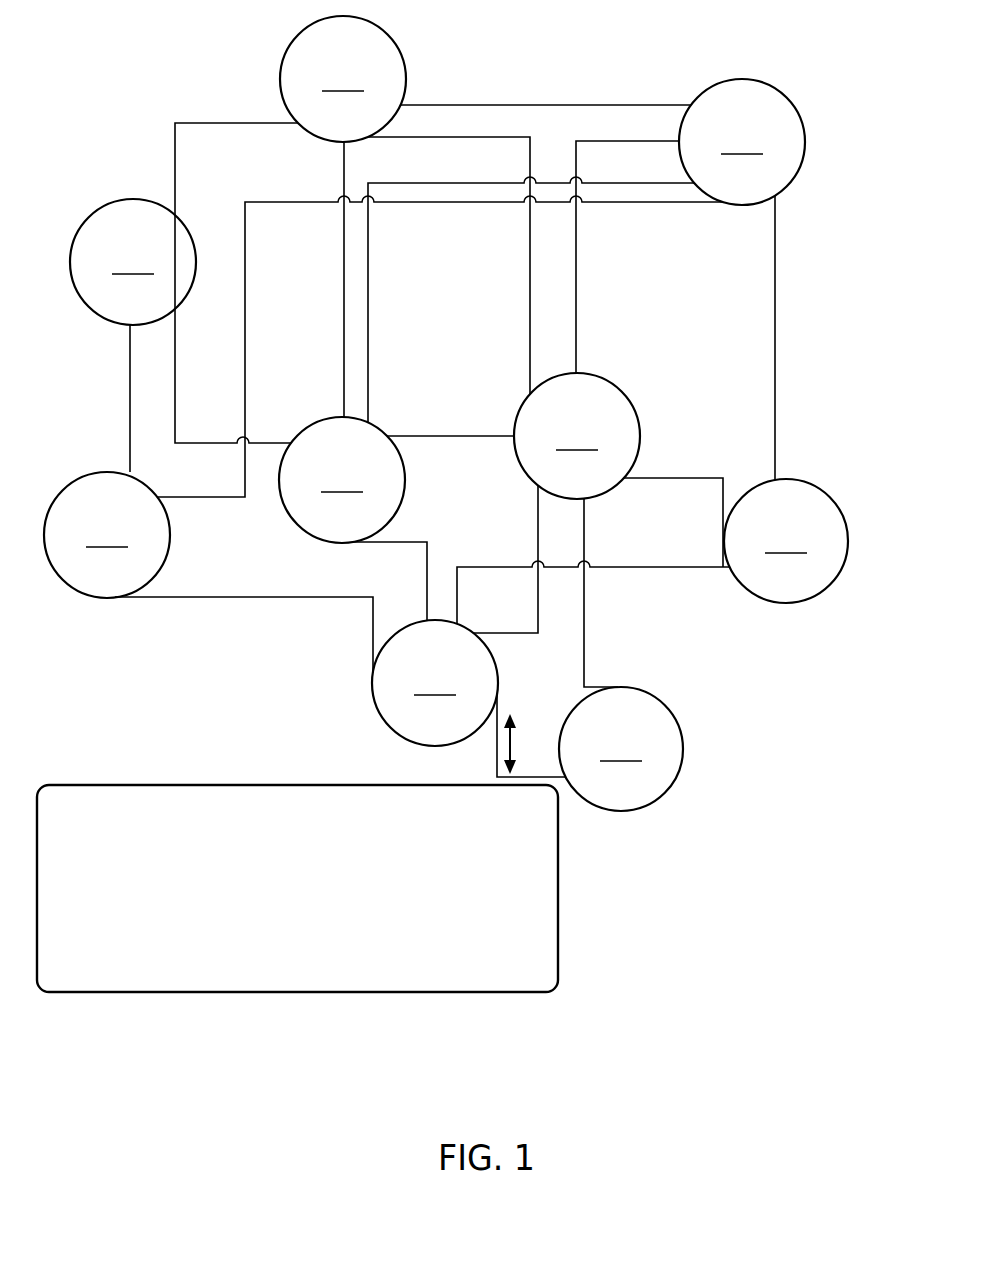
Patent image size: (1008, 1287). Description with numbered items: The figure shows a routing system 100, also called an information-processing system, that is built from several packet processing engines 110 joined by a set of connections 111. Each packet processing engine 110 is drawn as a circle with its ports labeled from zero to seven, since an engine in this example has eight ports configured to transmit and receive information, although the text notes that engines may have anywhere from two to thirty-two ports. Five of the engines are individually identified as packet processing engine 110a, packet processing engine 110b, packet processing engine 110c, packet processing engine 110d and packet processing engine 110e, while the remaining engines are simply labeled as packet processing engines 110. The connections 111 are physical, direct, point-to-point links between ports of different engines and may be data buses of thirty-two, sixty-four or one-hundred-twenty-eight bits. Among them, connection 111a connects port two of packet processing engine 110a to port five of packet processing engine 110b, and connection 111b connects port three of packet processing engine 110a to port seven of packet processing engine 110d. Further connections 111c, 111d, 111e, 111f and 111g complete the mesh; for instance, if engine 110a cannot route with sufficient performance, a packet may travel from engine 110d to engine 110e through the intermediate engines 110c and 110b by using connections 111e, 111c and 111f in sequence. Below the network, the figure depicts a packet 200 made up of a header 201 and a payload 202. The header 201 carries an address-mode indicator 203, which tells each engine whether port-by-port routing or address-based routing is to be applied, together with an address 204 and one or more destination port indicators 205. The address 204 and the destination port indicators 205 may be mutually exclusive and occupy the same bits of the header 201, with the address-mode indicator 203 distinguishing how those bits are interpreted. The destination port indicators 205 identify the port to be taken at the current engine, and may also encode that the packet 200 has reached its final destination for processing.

The routing system 100 is at (162, 47).
The packet processing engine 110 is at (225, 307).
The packet processing engine 110a is at (628, 395).
The packet processing engine 110b is at (832, 497).
The packet processing engine 110c is at (374, 700).
The packet processing engine 110d is at (681, 769).
The packet processing engine 110e is at (788, 97).
The connection 111 is at (537, 105).
The connection 111a is at (683, 478).
The connection 111b is at (590, 648).
The connection 111c is at (610, 565).
The connection 111d is at (538, 532).
The connection 111e is at (497, 708).
The connection 111f is at (775, 392).
The connection 111g is at (576, 310).
The packet 200 is at (297, 874).
The header 201 is at (106, 834).
The payload 202 is at (118, 906).
The address-mode indicator 203 is at (406, 831).
The address 204 is at (218, 862).
The destination port indicators 205 is at (300, 862).